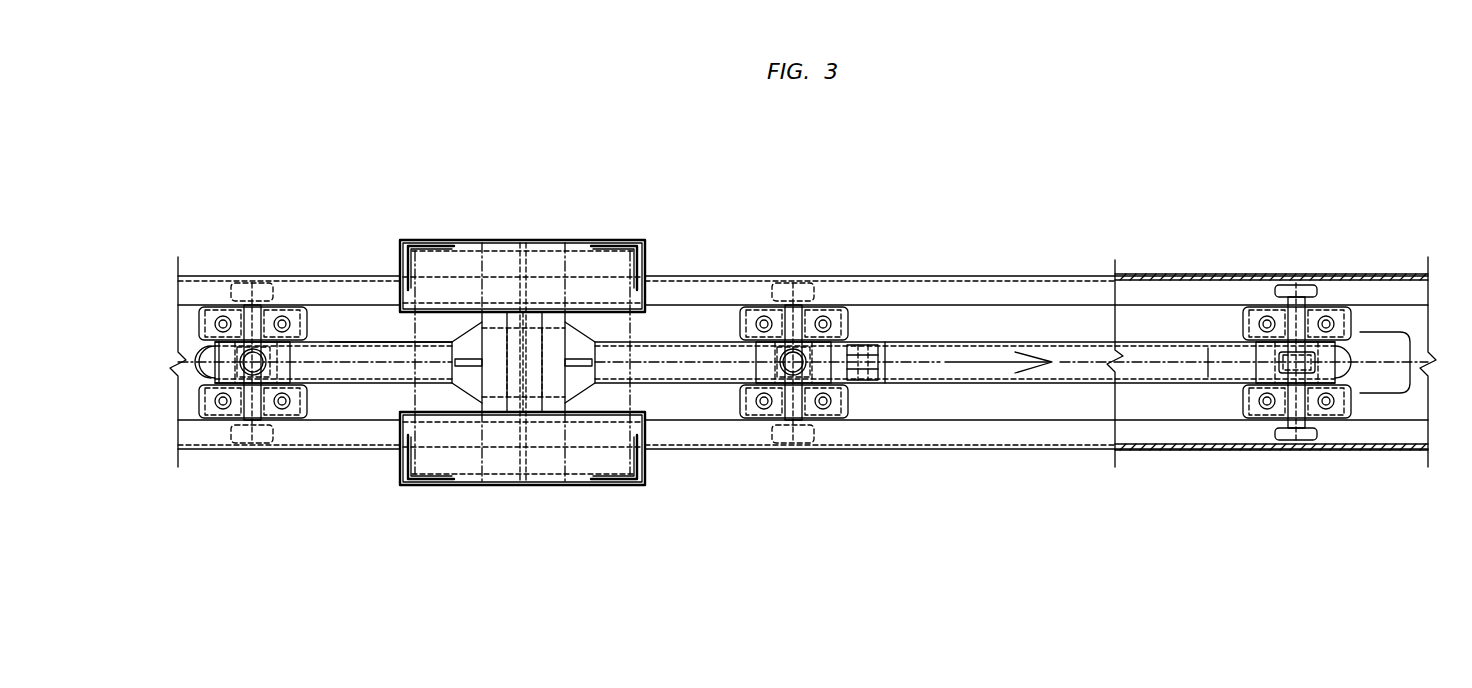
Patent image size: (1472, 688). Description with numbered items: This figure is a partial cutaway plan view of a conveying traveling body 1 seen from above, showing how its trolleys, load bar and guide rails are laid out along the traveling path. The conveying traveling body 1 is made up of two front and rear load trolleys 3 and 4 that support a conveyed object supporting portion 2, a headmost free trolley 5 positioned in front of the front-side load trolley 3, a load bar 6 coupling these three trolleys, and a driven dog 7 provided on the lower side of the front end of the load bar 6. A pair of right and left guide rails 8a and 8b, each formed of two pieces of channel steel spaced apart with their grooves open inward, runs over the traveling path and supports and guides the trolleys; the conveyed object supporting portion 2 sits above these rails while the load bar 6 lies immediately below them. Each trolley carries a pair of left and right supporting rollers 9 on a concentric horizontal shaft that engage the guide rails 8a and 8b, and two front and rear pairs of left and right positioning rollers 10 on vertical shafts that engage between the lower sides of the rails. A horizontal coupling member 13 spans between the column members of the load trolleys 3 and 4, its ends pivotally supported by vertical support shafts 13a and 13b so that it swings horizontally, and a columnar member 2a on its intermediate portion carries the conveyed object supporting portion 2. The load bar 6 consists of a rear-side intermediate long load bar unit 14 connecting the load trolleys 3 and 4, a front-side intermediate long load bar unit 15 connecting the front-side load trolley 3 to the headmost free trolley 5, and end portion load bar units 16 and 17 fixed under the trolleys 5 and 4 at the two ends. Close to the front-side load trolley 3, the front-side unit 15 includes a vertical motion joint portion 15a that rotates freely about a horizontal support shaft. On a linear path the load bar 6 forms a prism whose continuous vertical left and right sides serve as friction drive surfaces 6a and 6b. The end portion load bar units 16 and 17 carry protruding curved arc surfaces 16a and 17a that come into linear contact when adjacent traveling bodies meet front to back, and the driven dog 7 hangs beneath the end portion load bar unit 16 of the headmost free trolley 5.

The conveying traveling body 1 is at (676, 334).
The conveyed object supporting portion 2 is at (559, 240).
The columnar member 2a is at (523, 367).
The front-side load trolley 3 is at (848, 310).
The rear-side load trolley 4 is at (320, 320).
The headmost free trolley 5 is at (1357, 317).
The load bar 6 is at (1070, 342).
The friction drive surface 6a is at (1068, 385).
The friction drive surface 6b is at (995, 342).
The driven dog 7 is at (1411, 378).
The guide rail 8a is at (1160, 447).
The guide rail 8b is at (1160, 278).
The supporting roller 9 is at (262, 290).
The positioning roller 10 is at (223, 312).
The horizontal coupling member 13 is at (378, 378).
The vertical support shaft 13a is at (786, 362).
The vertical support shaft 13b is at (268, 356).
The rear-side intermediate long load bar unit 14 is at (345, 350).
The front-side intermediate long load bar unit 15 is at (1000, 385).
The vertical motion joint portion 15a is at (868, 382).
The end portion load bar unit 16 is at (1348, 358).
The protruding curved arc surface 16a is at (1350, 372).
The end portion load bar unit 17 is at (205, 370).
The protruding curved arc surface 17a is at (200, 352).